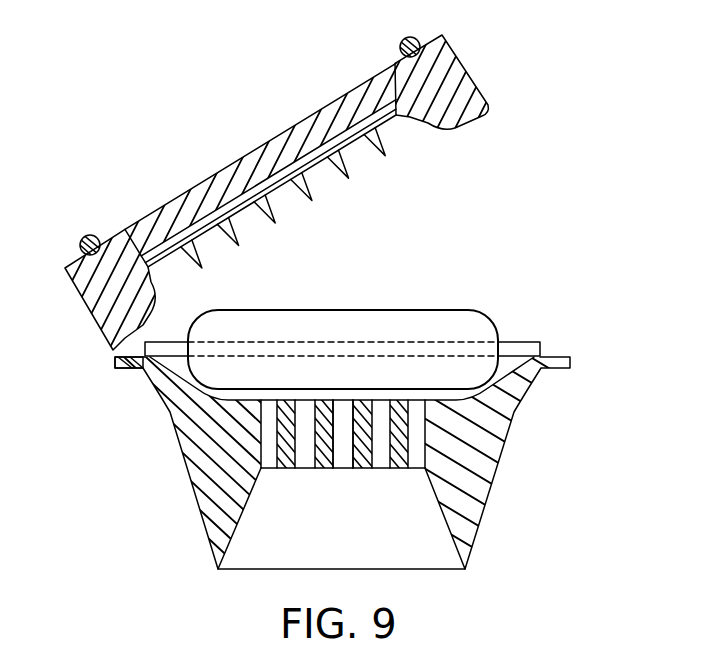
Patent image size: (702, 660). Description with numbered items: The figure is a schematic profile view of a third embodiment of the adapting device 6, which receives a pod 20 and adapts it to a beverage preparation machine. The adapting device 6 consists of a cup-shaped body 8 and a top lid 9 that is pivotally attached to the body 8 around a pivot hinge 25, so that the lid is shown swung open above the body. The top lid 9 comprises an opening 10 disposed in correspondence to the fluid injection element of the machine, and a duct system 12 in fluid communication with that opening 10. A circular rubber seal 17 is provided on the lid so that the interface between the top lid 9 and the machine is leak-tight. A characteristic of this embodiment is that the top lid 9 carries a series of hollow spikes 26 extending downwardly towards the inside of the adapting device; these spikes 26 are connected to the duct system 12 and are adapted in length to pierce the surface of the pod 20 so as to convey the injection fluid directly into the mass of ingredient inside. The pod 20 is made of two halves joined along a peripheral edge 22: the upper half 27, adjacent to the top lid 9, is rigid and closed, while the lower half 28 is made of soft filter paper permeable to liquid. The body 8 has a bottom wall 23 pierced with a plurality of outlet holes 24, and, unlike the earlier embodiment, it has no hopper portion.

The adapting device 6 is at (532, 485).
The adapting device body 8 is at (192, 460).
The top lid 9 is at (465, 80).
The opening 10 is at (142, 208).
The duct system 12 is at (218, 212).
The rubber seal 17 is at (81, 241).
The pod 20 is at (490, 298).
The peripheral edge 22 is at (536, 343).
The bottom wall 23 is at (287, 483).
The outlet holes 24 is at (340, 460).
The pivot hinge 25 is at (100, 362).
The hollow spikes 26 is at (385, 151).
The upper half 27 is at (345, 322).
The lower half 28 is at (478, 372).